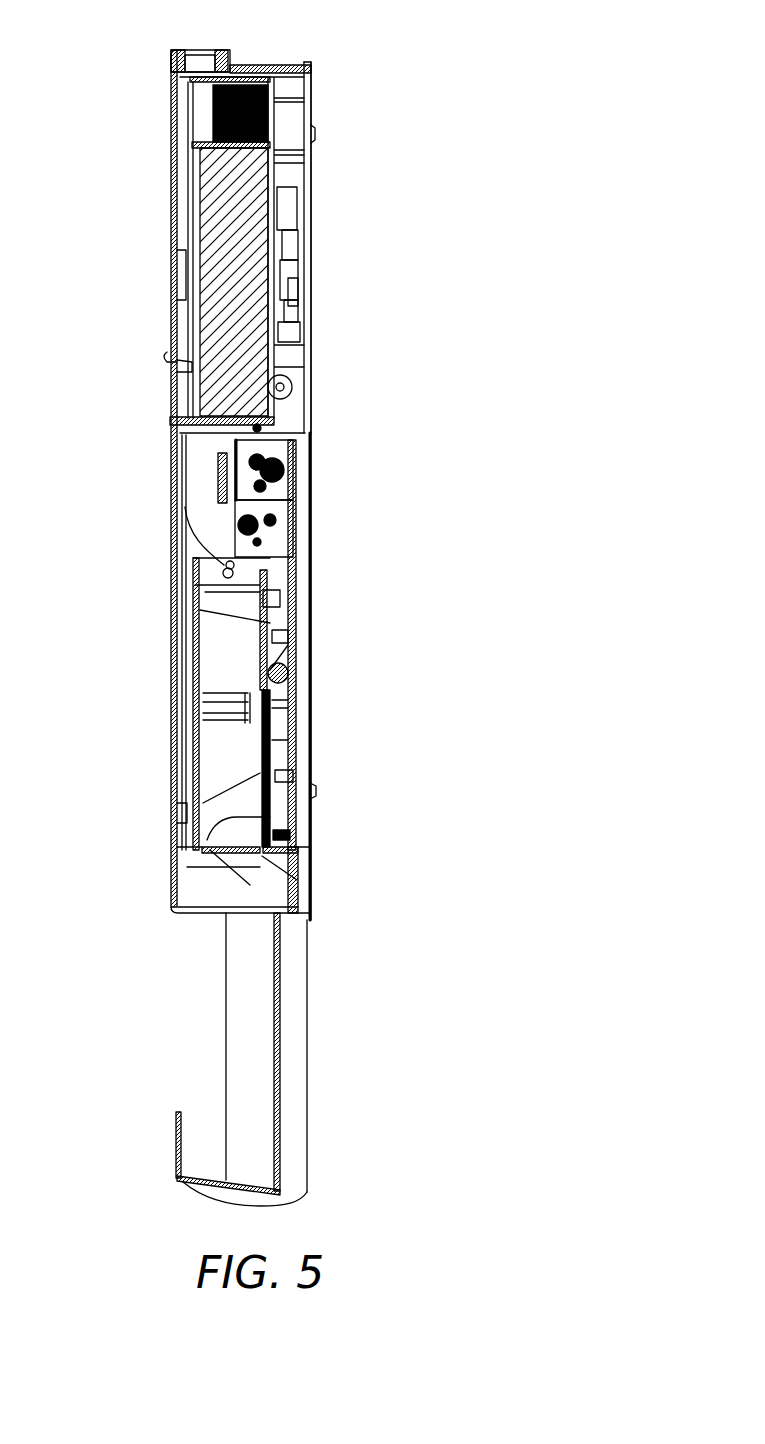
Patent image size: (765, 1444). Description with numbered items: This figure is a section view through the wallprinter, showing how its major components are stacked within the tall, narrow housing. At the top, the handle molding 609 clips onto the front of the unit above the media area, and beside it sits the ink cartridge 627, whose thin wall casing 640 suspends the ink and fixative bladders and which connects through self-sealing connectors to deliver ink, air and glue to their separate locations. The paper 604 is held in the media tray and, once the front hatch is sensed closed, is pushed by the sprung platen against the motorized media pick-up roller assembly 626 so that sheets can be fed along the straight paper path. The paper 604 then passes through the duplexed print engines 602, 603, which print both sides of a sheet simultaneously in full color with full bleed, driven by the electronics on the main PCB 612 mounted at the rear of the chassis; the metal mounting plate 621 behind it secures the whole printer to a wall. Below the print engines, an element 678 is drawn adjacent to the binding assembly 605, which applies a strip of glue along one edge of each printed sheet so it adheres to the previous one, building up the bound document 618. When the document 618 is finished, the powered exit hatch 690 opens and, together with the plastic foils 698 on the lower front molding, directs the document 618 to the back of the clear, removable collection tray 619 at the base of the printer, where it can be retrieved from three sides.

The handle molding 609 is at (215, 61).
The thin wall casing 640 is at (208, 138).
The ink cartridge 627 is at (304, 102).
The main PCB 612 is at (311, 221).
The metal mounting plate 621 is at (311, 291).
The paper 604 is at (207, 335).
The motorized media pick-up roller assembly 626 is at (292, 385).
The print engine 602 is at (293, 440).
The print engine 603 is at (297, 506).
The pulley 678 is at (228, 565).
The binding assembly 605 is at (240, 618).
The plastic foils 698 is at (250, 885).
The powered exit hatch 690 is at (297, 880).
The bound document 618 is at (247, 1044).
The collection tray 619 is at (178, 1131).